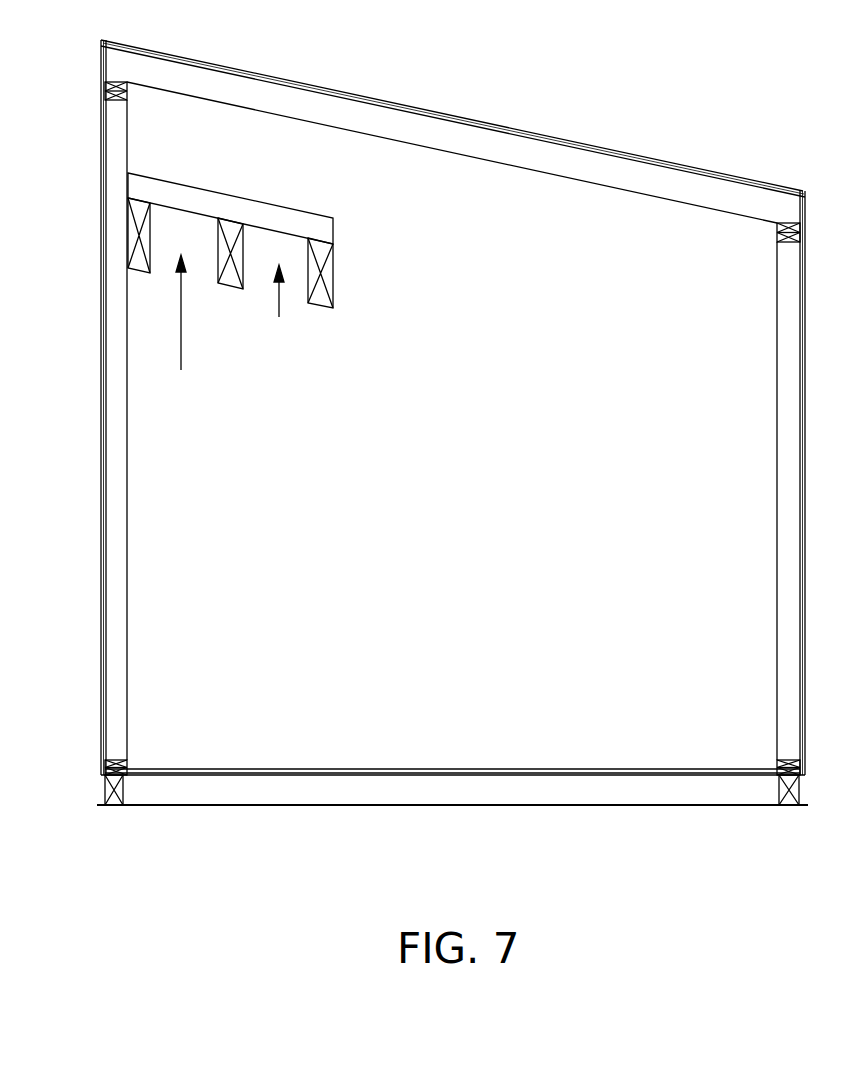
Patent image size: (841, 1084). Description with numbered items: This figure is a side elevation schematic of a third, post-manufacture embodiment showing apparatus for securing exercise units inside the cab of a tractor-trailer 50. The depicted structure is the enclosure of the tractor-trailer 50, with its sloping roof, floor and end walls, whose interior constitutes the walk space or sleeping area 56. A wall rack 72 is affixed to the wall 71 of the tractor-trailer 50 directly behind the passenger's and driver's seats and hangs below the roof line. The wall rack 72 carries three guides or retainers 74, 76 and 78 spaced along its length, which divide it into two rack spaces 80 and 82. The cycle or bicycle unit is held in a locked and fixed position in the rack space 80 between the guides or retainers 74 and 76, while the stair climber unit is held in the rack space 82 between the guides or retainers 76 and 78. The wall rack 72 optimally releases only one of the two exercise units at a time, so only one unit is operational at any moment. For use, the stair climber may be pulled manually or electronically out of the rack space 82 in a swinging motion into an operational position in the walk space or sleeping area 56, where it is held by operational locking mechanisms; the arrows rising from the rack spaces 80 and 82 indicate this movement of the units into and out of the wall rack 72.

The tractor-trailer 50 is at (678, 123).
The sleeping area 56 is at (509, 612).
The wall 71 is at (127, 527).
The wall rack 72 is at (235, 195).
The guide or retainer 74 is at (140, 268).
The guide or retainer 76 is at (228, 289).
The guide or retainer 78 is at (333, 273).
The rack space 80 is at (181, 370).
The rack space 82 is at (279, 317).